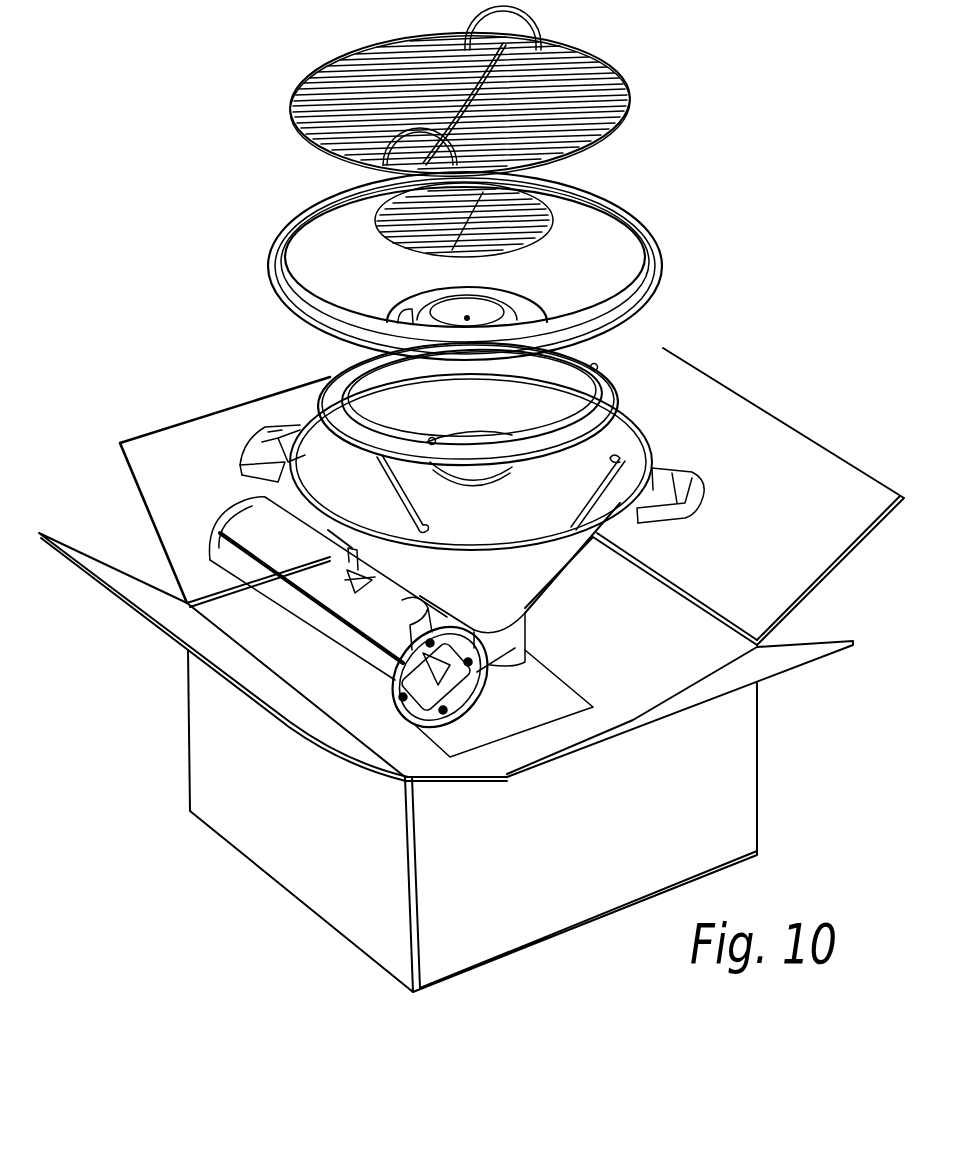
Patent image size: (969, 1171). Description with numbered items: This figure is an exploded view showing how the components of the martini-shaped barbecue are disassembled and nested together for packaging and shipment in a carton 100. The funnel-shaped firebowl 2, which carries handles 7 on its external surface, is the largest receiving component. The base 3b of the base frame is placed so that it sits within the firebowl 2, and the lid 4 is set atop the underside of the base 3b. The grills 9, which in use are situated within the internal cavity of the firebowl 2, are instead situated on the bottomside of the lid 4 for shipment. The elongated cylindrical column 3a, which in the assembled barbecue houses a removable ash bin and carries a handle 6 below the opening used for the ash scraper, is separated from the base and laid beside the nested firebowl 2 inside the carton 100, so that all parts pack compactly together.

The packaging box 100 is at (742, 741).
The firebowl 2 is at (628, 440).
The handles 7 is at (262, 438).
The base 3b is at (600, 367).
The lid 4 is at (662, 246).
The grills 9 is at (640, 103).
The column 3a is at (247, 523).
The handle 6 is at (350, 583).